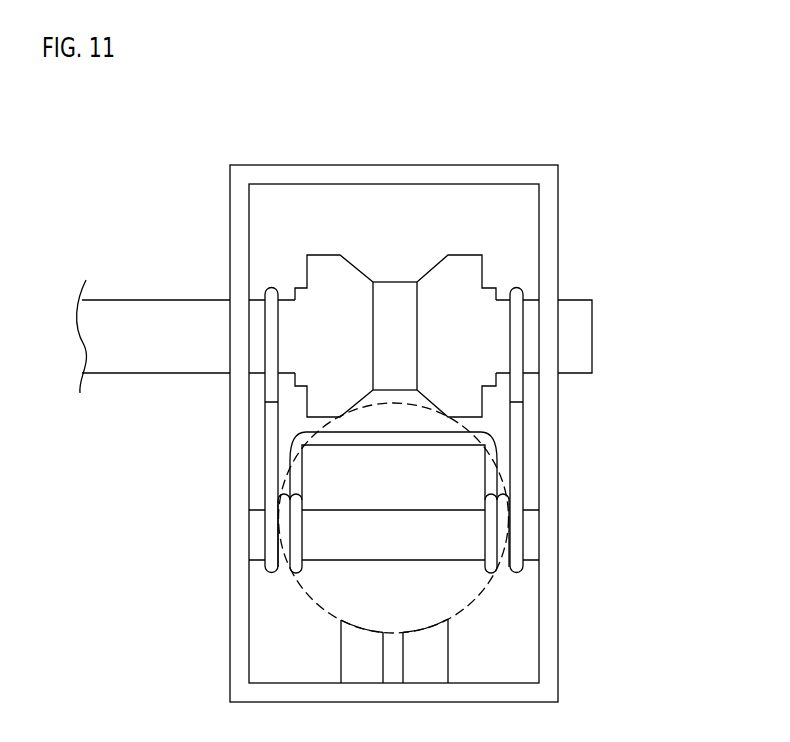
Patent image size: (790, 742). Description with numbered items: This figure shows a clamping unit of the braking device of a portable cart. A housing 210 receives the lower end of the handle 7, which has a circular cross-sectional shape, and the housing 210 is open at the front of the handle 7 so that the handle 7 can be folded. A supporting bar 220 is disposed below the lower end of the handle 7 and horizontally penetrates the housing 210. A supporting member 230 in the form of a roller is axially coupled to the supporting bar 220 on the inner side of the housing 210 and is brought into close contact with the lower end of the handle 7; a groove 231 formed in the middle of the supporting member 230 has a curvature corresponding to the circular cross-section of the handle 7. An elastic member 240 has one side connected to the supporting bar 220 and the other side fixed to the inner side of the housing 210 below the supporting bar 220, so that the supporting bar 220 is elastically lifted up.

The handle 7 is at (483, 590).
The housing 210 is at (550, 218).
The supporting bar 220 is at (157, 353).
The supporting member 230 is at (353, 292).
The groove 231 is at (395, 283).
The elastic member 240 is at (492, 483).